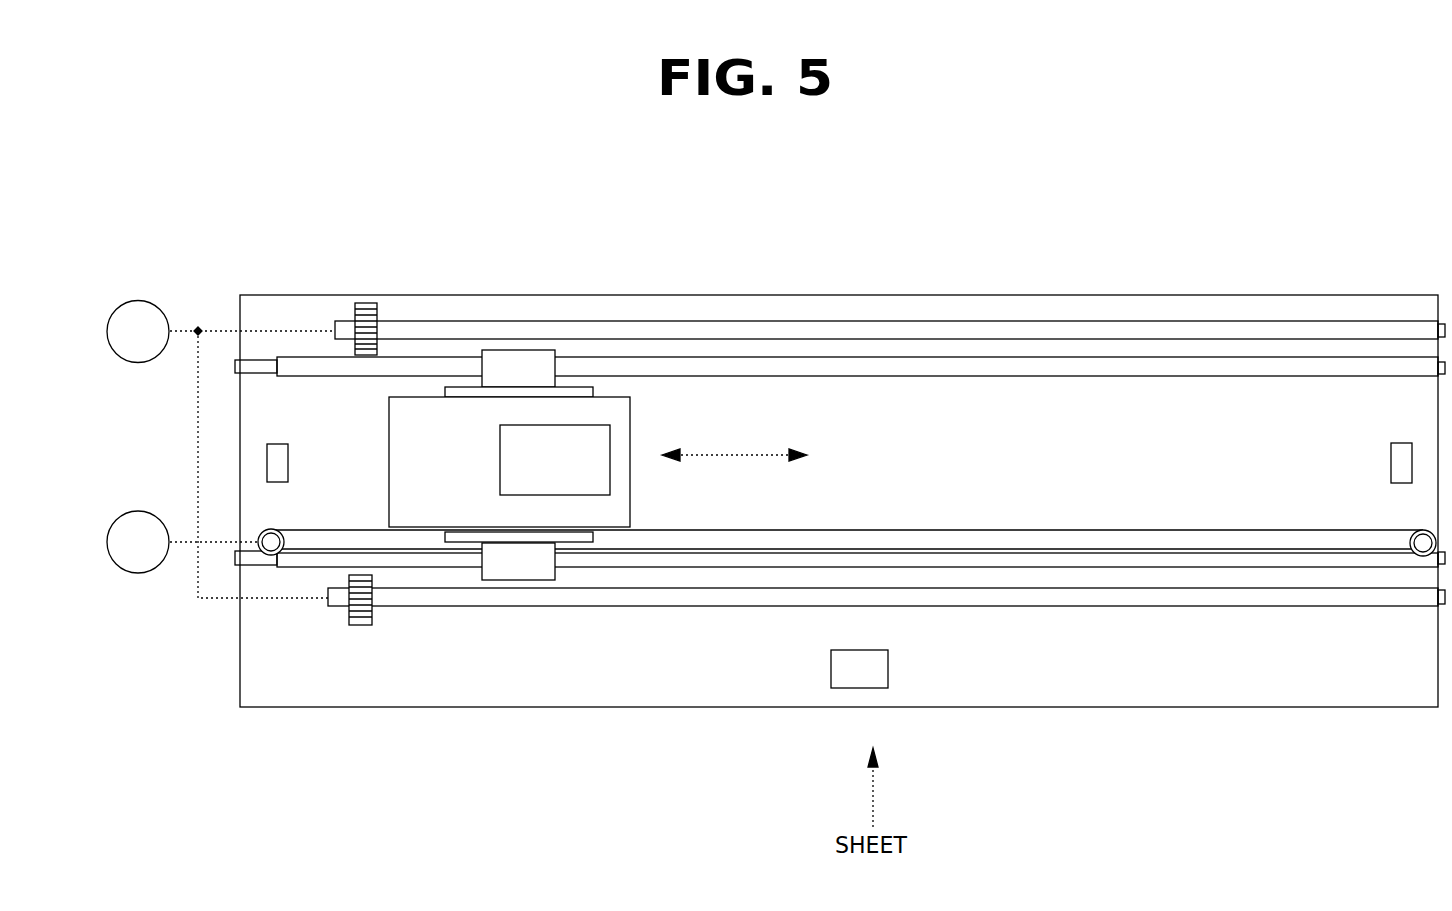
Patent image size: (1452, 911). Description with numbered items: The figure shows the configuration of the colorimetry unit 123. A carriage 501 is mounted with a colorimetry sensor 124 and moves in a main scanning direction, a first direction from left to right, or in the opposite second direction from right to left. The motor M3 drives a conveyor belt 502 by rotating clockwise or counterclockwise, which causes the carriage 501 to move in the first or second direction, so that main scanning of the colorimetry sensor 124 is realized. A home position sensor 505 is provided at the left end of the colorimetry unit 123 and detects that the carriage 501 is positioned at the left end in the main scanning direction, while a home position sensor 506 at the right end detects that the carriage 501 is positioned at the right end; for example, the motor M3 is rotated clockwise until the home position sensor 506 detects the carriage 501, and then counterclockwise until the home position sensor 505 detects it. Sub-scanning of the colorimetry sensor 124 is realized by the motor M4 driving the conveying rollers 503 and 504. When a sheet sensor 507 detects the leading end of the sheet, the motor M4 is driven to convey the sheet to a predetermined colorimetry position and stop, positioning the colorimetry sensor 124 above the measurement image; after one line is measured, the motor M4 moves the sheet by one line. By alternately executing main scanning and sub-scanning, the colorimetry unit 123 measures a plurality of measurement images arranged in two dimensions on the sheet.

The colorimetry unit 123 is at (1412, 217).
The colorimetry sensor 124 is at (500, 468).
The carriage 501 is at (389, 470).
The conveyor belt 502 is at (370, 530).
The conveying roller 503 is at (362, 310).
The conveying roller 504 is at (337, 607).
The home position sensor 505 is at (275, 444).
The home position sensor 506 is at (1391, 463).
The sheet sensor 507 is at (832, 675).
The motor M3 is at (138, 511).
The motor M4 is at (138, 300).